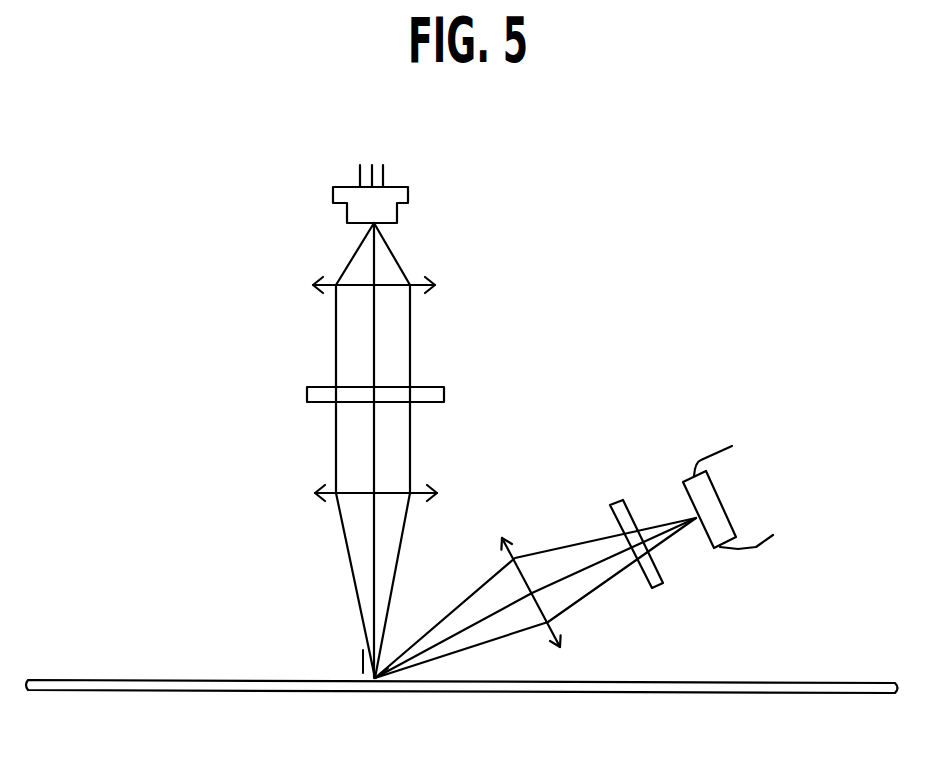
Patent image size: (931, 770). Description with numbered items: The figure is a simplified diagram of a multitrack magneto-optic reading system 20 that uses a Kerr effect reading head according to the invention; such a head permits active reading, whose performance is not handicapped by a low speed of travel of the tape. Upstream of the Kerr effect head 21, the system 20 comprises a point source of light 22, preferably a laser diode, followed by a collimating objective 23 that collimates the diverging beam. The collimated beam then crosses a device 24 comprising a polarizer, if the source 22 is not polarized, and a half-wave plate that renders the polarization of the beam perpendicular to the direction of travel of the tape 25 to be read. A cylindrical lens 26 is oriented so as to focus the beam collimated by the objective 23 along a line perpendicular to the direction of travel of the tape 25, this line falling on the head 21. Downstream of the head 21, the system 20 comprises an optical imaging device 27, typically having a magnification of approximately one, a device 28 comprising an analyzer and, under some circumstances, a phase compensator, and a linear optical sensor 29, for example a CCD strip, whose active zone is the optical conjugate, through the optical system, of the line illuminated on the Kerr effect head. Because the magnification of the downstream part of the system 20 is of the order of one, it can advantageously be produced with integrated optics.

The multitrack magneto-optic reading system 20 is at (694, 191).
The Kerr effect head 21 is at (374, 677).
The point source of light 22 is at (400, 204).
The collimating objective 23 is at (436, 285).
The device comprising a polarizer and half-wave plate 24 is at (444, 391).
The tape to be read 25 is at (145, 691).
The cylindrical lens 26 is at (440, 492).
The optical imaging device 27 is at (516, 552).
The device comprising an analyzer 28 is at (617, 500).
The linear optical sensor 29 is at (712, 497).